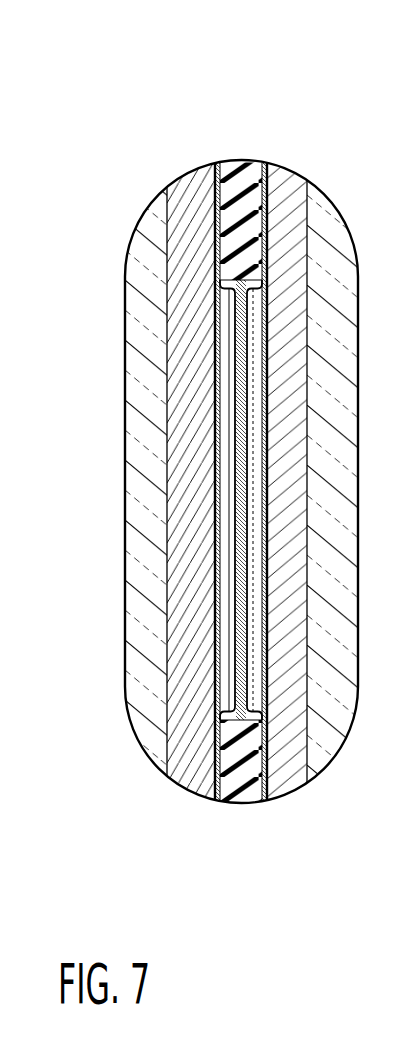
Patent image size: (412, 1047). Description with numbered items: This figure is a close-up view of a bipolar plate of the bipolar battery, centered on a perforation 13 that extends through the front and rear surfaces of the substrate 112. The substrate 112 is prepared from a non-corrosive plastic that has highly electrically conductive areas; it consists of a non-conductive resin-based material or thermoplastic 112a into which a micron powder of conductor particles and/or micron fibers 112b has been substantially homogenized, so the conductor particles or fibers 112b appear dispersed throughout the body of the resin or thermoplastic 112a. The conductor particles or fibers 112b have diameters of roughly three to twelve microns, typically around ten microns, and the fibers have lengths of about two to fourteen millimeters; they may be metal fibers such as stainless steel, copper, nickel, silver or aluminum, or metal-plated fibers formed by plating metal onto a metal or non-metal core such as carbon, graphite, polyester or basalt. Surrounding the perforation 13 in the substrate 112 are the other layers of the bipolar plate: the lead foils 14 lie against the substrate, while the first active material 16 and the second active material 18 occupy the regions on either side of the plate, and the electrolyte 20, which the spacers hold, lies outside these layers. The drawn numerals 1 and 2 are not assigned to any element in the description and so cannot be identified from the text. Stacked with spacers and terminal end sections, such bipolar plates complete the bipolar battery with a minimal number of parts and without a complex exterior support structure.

The battery cell 1 is at (268, 481).
The electrode layer 2 is at (289, 418).
The perforation 13 is at (257, 374).
The lead foil 14 is at (218, 160).
The first active material 16 is at (190, 783).
The second active material 18 is at (287, 186).
The electrolyte 20 is at (140, 250).
The substrate 112 is at (240, 160).
The non-conductive resin-based material or thermoplastic 112a is at (220, 720).
The conductor particles or fibers 112b is at (234, 802).